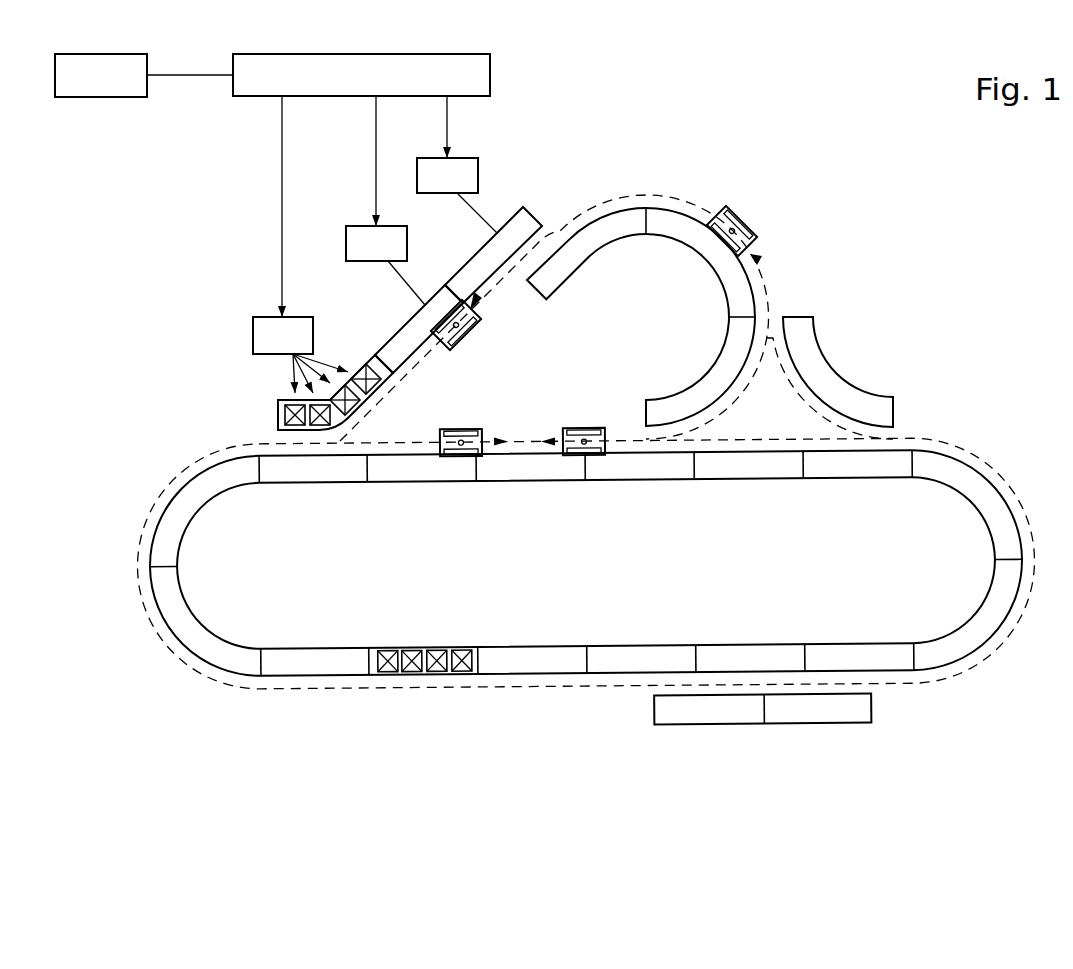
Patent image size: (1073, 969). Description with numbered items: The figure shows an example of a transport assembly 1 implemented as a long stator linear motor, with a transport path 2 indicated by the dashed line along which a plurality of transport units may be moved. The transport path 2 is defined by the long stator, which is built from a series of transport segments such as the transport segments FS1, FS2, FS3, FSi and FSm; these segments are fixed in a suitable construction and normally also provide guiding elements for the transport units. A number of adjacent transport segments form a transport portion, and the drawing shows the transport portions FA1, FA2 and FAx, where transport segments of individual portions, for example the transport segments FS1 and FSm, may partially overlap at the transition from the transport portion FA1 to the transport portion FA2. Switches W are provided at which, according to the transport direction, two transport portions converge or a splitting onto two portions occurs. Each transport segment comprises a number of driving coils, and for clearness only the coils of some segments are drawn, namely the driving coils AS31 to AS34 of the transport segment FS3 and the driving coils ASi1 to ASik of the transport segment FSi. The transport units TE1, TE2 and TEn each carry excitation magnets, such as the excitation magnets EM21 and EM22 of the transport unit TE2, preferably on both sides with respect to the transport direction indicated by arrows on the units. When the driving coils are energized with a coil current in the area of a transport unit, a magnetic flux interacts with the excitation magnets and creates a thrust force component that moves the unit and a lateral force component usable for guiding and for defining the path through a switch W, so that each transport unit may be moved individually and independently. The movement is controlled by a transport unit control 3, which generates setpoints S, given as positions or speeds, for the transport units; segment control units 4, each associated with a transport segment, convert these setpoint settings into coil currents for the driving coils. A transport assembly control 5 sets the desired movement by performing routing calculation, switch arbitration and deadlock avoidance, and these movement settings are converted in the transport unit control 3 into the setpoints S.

The transport assembly 1 is at (609, 594).
The transport path 2 is at (990, 466).
The transport unit control 3 is at (362, 87).
The segment control unit 4 is at (253, 340).
The transport assembly control 5 is at (109, 88).
The setpoint S is at (354, 206).
The switch W is at (783, 302).
The transport portion FA1 is at (263, 252).
The transport portion FA2 is at (793, 232).
The transport portion FAx is at (150, 675).
The transport segment FS1 is at (533, 212).
The transport segment FS2 is at (405, 324).
The transport segment FS3 is at (252, 379).
The transport segment FSi is at (441, 665).
The transport segment FSm is at (628, 208).
The transport unit TE1 is at (728, 224).
The transport unit TE2 is at (505, 350).
The transport unit TEn is at (567, 456).
The excitation magnet EM21 is at (467, 340).
The excitation magnet EM22 is at (449, 318).
The driving coil AS31 is at (282, 428).
The driving coil AS34 is at (364, 363).
The driving coil ASi1 is at (388, 671).
The driving coil ASik is at (463, 671).